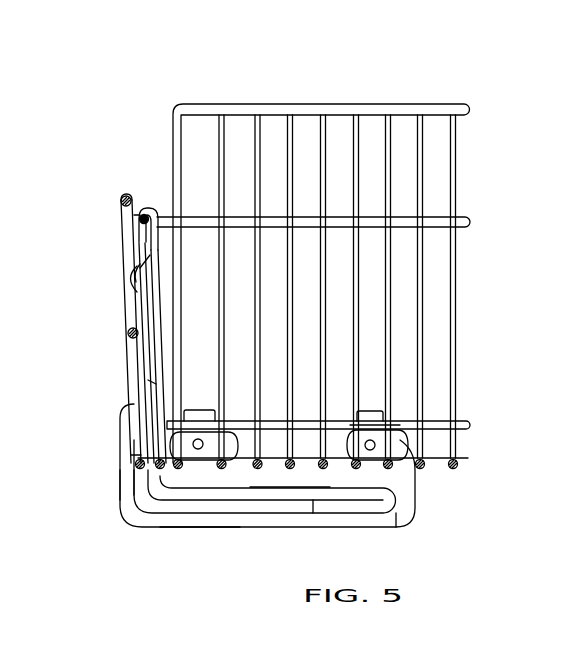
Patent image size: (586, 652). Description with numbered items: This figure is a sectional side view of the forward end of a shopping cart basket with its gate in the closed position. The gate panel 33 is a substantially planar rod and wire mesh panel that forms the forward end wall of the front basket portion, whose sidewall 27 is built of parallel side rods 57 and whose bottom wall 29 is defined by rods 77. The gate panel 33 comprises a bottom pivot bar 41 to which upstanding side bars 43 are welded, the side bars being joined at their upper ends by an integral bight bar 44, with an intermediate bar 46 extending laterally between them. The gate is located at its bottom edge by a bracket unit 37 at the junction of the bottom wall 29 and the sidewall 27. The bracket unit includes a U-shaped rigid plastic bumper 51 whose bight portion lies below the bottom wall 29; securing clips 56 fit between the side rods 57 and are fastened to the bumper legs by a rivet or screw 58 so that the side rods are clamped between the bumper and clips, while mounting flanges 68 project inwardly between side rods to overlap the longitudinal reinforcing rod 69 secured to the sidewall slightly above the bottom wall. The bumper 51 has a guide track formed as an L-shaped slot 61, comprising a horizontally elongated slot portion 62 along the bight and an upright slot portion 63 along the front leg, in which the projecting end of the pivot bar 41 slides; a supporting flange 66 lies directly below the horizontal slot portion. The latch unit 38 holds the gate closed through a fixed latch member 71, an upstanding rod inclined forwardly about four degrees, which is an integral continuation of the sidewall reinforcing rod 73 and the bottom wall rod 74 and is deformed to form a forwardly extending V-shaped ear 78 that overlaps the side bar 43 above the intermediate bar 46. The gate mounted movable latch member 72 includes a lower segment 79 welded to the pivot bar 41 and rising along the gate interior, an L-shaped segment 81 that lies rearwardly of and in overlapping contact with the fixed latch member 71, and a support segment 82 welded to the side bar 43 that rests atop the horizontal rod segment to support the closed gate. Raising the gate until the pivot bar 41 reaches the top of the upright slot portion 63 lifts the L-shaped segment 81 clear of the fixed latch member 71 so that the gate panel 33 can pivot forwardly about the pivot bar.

The sidewall 27 is at (371, 98).
The bottom wall 29 is at (290, 485).
The gate panel 33 is at (113, 356).
The bracket unit 37 is at (200, 537).
The latch unit 38 is at (150, 180).
The pivot bar 41 is at (137, 466).
The side bar 43 is at (123, 237).
The bight bar 44 is at (122, 198).
The intermediate bar 46 is at (128, 331).
The bumper 51 is at (412, 515).
The securing clip 56 is at (218, 470).
The side rods 57 is at (176, 165).
The rivet or screw 58 is at (385, 425).
The L-shaped slot 61 is at (303, 500).
The horizontally elongated slot portion 62 is at (405, 510).
The upright slot portion 63 is at (147, 485).
The supporting flange 66 is at (352, 500).
The mounting flange 68 is at (200, 413).
The reinforcing rod 69 is at (440, 430).
The fixed latch member 71 is at (160, 412).
The movable latch member 72 is at (150, 300).
The rod 73 is at (437, 224).
The rod 74 is at (152, 498).
The rods 77 is at (318, 500).
The ear 78 is at (125, 278).
The lower segment 79 is at (153, 383).
The L-shaped segment 81 is at (130, 220).
The support segment 82 is at (140, 208).